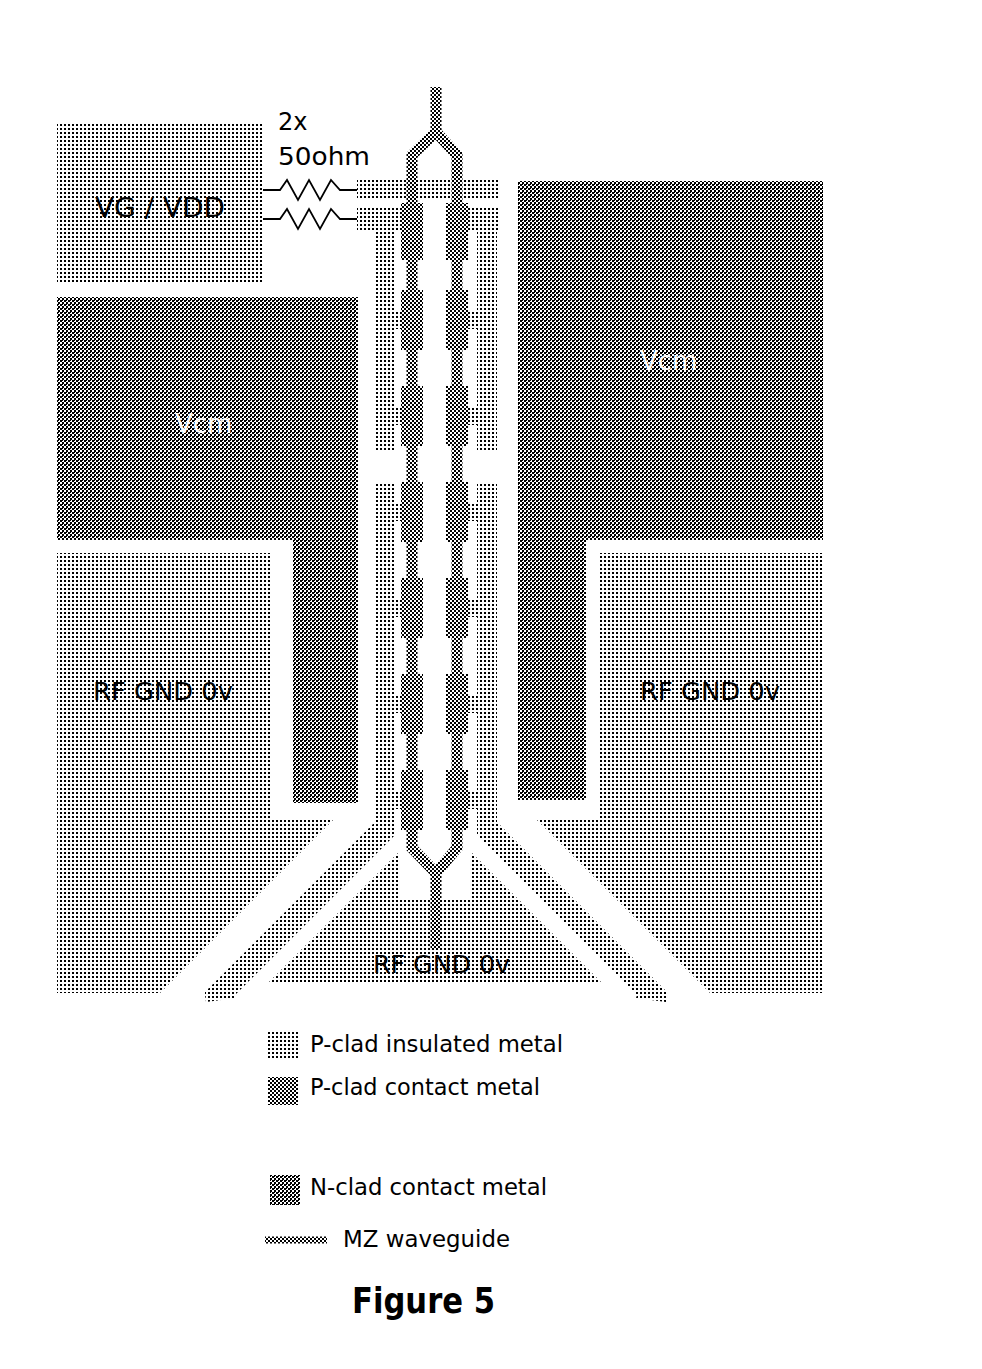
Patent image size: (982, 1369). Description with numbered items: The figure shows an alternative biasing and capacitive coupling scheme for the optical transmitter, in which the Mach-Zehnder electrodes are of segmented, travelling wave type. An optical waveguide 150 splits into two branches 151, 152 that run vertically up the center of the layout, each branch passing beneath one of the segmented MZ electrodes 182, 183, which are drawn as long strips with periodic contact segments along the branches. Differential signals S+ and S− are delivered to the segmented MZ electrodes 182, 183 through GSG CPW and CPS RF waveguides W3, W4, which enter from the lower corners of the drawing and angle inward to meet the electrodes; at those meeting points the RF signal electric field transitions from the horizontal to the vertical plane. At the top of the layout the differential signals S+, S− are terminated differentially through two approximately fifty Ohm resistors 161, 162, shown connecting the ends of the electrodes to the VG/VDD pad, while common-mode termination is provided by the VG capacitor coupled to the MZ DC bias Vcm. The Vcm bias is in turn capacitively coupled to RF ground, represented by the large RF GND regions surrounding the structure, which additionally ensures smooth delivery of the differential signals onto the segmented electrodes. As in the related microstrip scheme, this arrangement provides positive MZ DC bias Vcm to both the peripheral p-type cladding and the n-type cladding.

The optical waveguide 150 is at (425, 933).
The branch 151 is at (420, 137).
The branch 152 is at (450, 137).
The resistor 161 is at (257, 100).
The resistor 162 is at (310, 219).
The MZ electrode 182 is at (407, 848).
The MZ electrode 183 is at (465, 848).
The RF waveguide W3 is at (218, 982).
The RF waveguide W4 is at (660, 984).